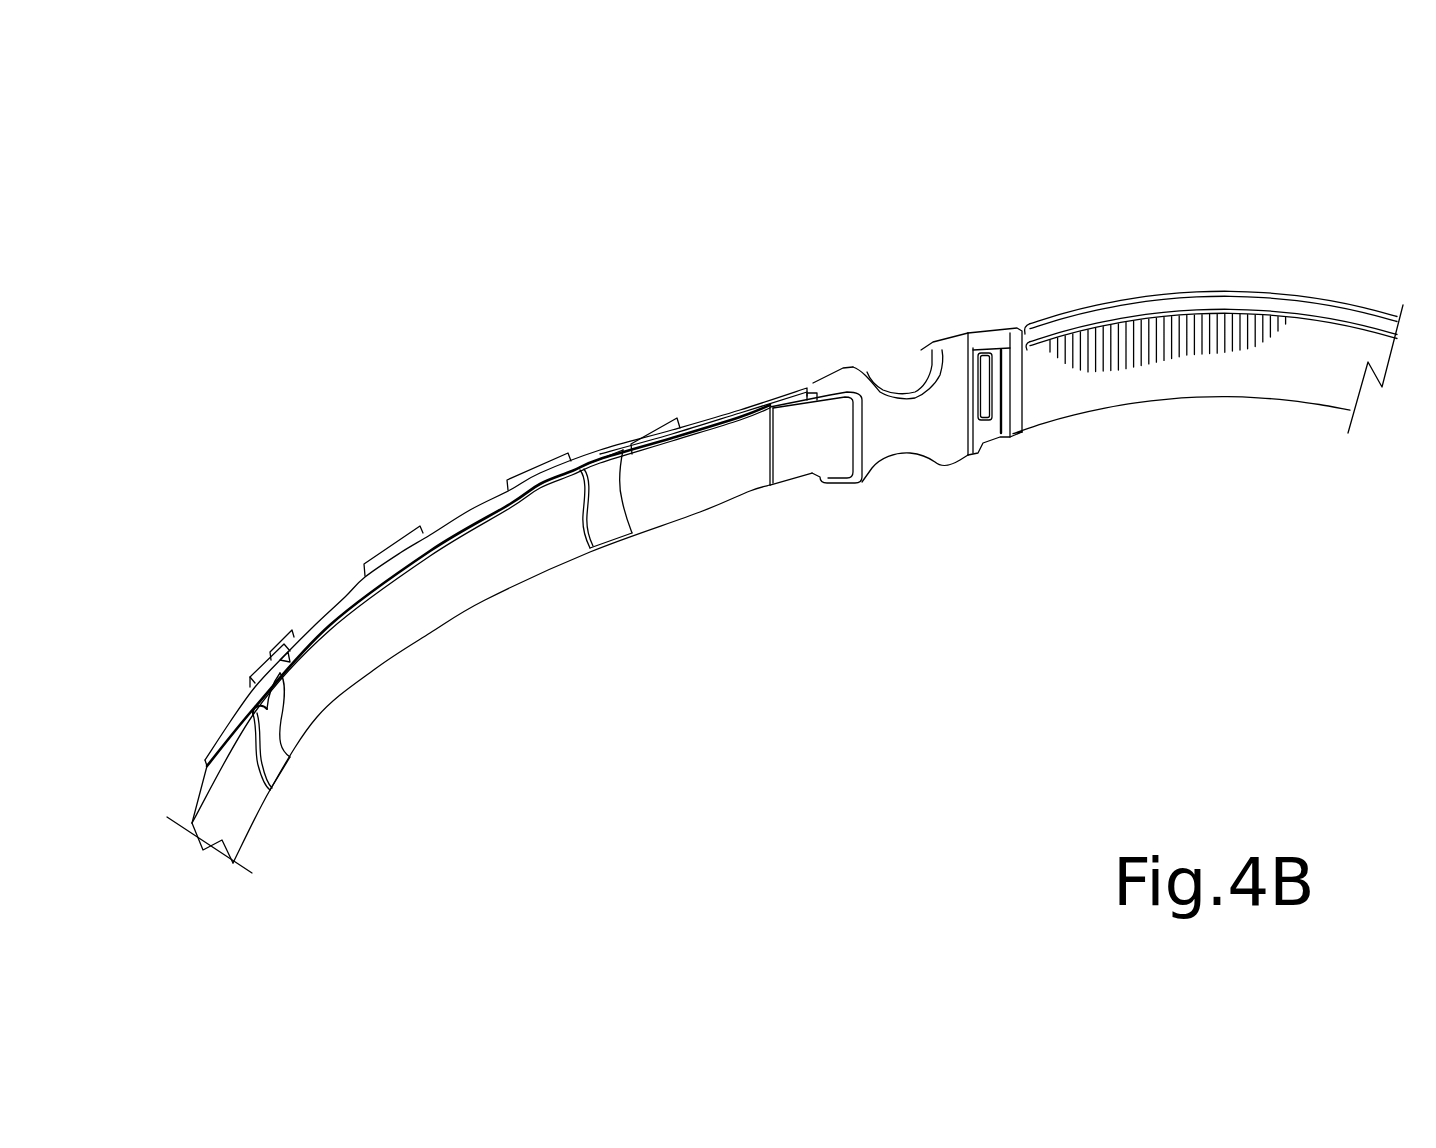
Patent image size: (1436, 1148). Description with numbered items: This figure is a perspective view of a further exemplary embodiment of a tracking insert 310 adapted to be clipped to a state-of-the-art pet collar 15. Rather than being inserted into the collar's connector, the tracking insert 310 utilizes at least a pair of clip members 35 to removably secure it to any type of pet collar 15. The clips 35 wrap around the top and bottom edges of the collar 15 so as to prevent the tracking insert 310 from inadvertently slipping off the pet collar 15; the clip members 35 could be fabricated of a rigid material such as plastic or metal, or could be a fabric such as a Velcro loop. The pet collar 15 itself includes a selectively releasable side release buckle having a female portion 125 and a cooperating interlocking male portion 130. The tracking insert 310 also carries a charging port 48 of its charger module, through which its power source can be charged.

The pet collar 15 is at (467, 585).
The clip members 35 is at (272, 757).
The charging port 48 is at (269, 662).
The female portion 125 is at (877, 440).
The male portion 130 is at (903, 357).
The tracking insert 310 is at (458, 510).